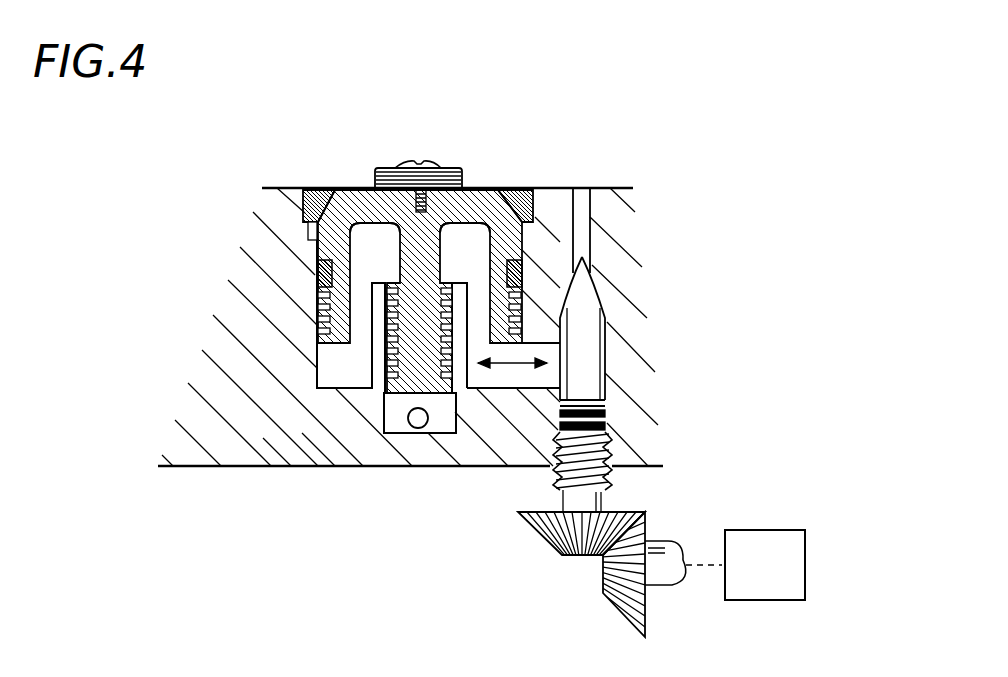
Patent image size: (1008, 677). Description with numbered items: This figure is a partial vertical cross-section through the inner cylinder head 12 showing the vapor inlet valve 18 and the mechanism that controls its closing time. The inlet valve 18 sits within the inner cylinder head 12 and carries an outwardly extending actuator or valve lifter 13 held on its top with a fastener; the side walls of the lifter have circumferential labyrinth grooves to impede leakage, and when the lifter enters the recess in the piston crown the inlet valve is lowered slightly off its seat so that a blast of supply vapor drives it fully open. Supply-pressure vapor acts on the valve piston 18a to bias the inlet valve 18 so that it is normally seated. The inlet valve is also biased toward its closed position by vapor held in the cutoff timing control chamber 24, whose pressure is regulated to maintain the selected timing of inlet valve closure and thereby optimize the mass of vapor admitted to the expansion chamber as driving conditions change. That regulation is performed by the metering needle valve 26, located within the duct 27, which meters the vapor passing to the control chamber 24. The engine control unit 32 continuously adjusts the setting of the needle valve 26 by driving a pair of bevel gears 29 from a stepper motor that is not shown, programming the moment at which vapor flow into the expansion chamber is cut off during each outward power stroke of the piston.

The inner cylinder head 12 is at (550, 187).
The valve lifter 13 is at (376, 175).
The vapor inlet valve 18 is at (316, 252).
The valve piston 18a is at (429, 393).
The cutoff timing control chamber 24 is at (378, 257).
The metering needle valve 26 is at (585, 358).
The duct 27 is at (582, 202).
The bevel gears 29 is at (623, 510).
The ECU 32 is at (750, 530).